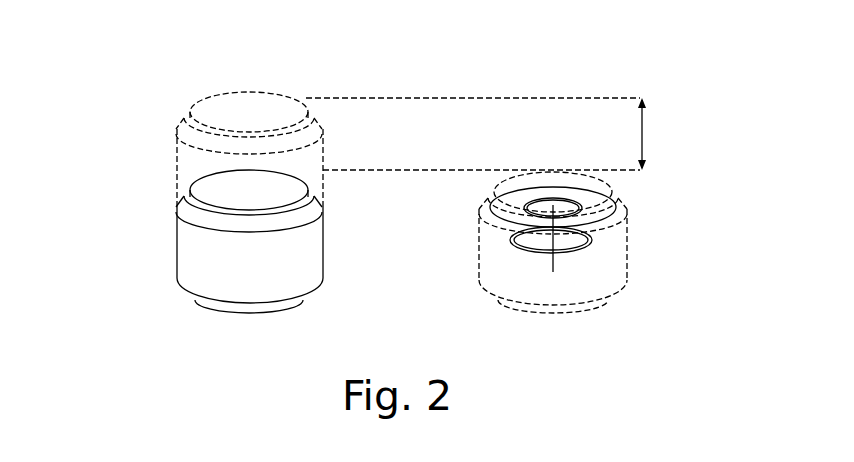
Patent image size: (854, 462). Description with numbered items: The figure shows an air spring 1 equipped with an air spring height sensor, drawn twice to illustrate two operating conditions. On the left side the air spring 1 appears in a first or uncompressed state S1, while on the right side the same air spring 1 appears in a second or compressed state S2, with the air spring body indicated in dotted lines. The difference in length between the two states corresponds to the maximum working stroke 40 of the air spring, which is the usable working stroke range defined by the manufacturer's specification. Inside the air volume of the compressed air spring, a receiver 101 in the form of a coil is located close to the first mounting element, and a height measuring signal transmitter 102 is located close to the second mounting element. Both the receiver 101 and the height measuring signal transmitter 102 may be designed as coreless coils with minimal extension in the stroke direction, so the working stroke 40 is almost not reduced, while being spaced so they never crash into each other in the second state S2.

The air spring 1 is at (123, 160).
The working stroke 40 is at (643, 134).
The receiver 101 is at (607, 203).
The height measuring signal transmitter 102 is at (587, 253).
The first or uncompressed state S1 is at (473, 98).
The second or compressed state S2 is at (432, 171).